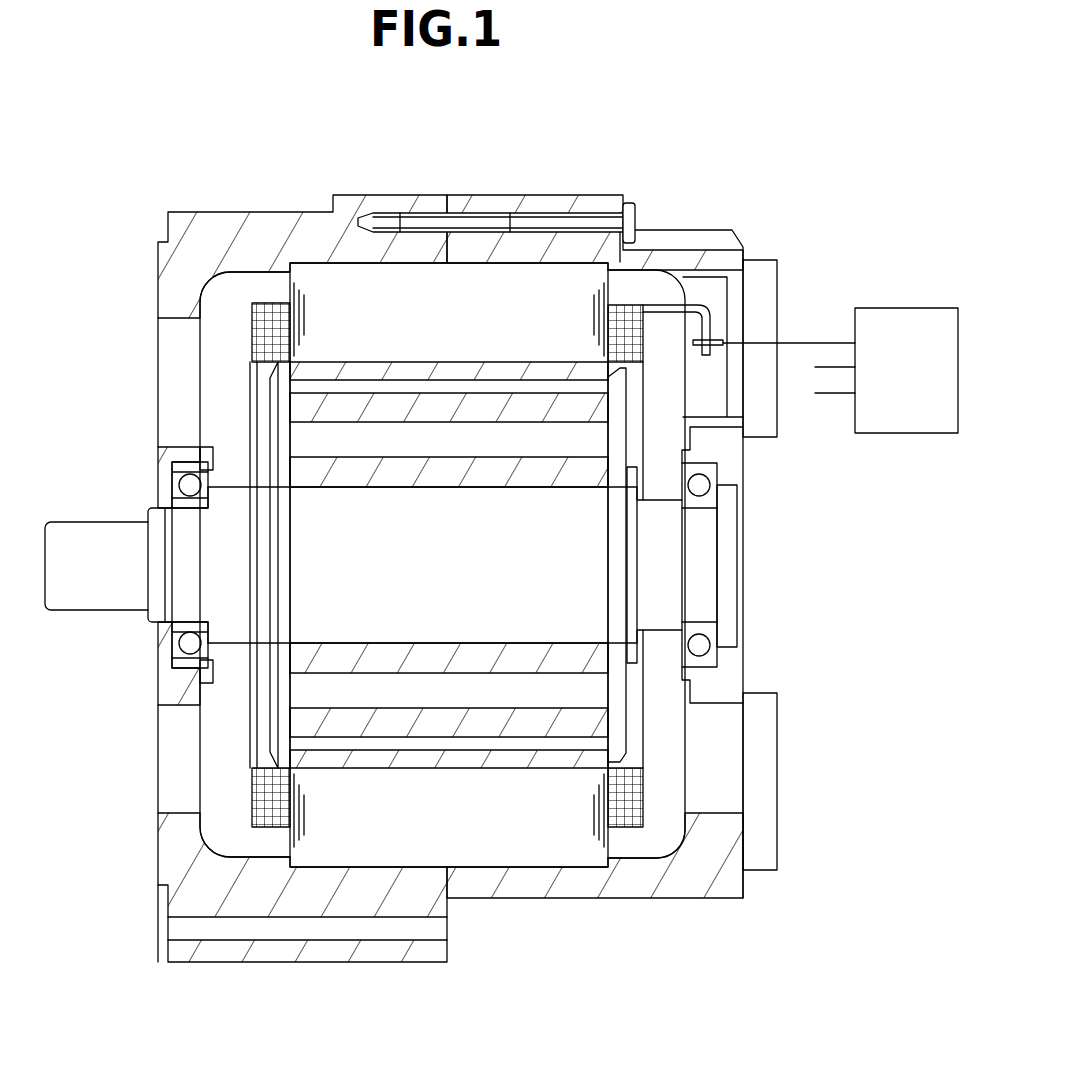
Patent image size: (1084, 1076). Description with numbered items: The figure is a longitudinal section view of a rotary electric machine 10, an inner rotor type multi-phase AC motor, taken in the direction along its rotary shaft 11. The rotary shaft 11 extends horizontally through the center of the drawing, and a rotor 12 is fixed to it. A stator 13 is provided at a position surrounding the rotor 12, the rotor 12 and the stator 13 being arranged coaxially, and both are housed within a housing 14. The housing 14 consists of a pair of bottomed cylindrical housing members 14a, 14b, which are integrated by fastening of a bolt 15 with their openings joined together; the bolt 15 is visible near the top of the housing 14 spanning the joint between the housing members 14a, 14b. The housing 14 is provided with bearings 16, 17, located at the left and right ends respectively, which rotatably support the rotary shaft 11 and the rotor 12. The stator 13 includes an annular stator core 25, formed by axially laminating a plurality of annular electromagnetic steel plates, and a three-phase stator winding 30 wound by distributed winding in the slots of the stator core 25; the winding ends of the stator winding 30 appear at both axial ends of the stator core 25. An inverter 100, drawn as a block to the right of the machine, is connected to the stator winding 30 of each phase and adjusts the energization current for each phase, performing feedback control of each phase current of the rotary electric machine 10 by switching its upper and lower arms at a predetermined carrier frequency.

The rotary electric machine 10 is at (745, 156).
The rotary shaft 11 is at (95, 597).
The rotor 12 is at (583, 407).
The stator 13 is at (622, 968).
The housing 14 is at (492, 127).
The housing member 14a is at (392, 203).
The housing member 14b is at (480, 203).
The bolt 15 is at (590, 221).
The bearing 16 is at (180, 470).
The bearing 17 is at (710, 481).
The stator core 25 is at (538, 858).
The stator winding 30 is at (626, 826).
The inverter 100 is at (905, 308).